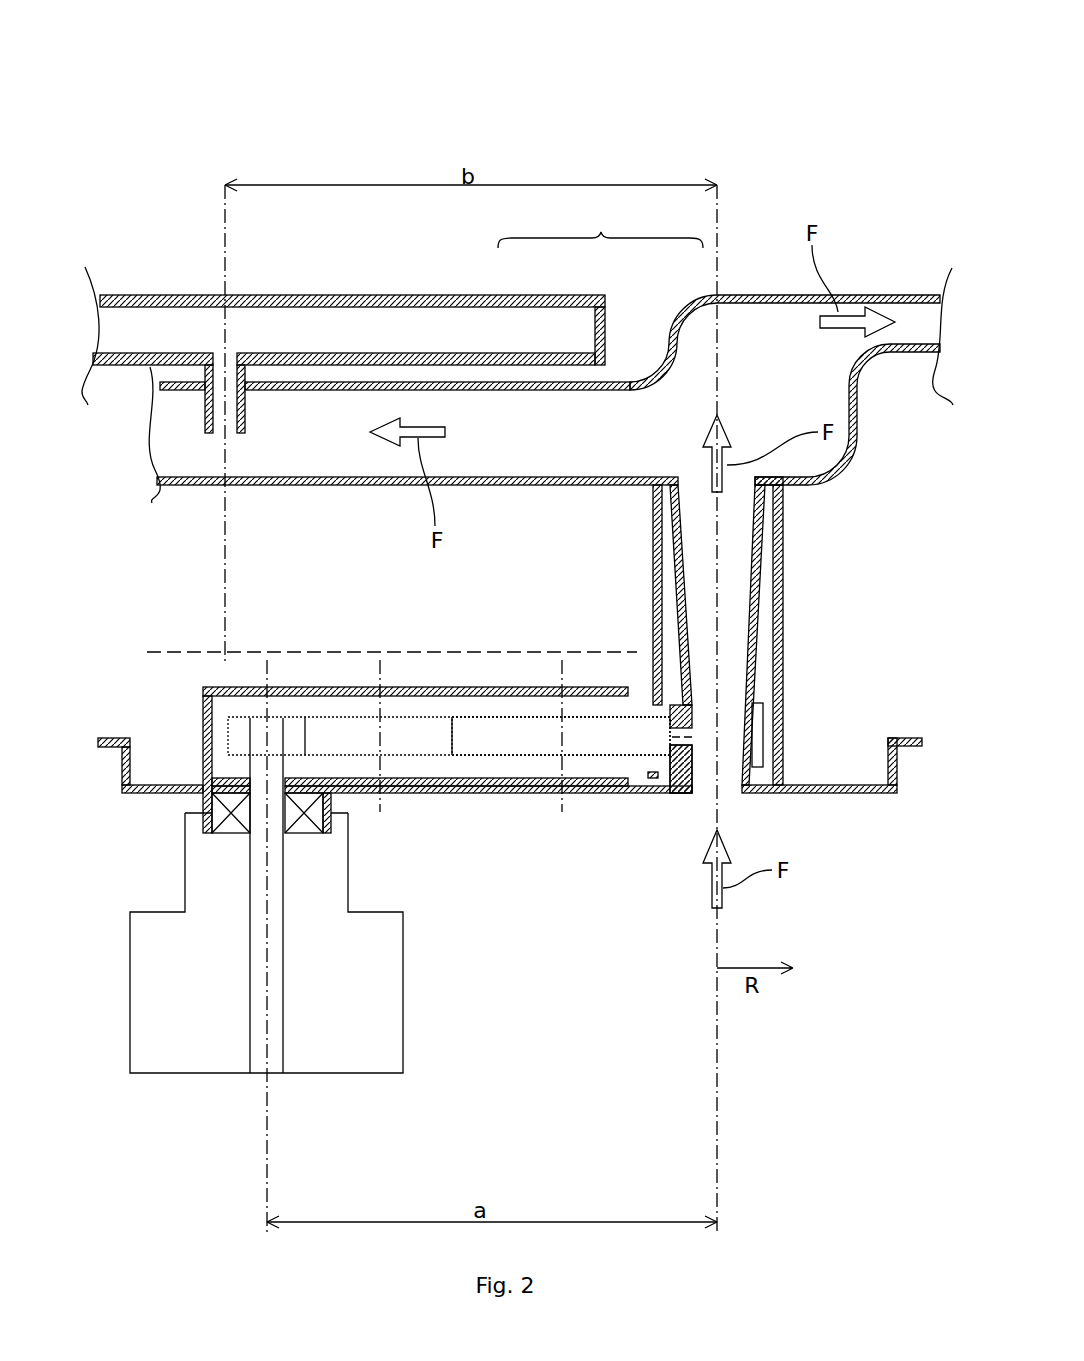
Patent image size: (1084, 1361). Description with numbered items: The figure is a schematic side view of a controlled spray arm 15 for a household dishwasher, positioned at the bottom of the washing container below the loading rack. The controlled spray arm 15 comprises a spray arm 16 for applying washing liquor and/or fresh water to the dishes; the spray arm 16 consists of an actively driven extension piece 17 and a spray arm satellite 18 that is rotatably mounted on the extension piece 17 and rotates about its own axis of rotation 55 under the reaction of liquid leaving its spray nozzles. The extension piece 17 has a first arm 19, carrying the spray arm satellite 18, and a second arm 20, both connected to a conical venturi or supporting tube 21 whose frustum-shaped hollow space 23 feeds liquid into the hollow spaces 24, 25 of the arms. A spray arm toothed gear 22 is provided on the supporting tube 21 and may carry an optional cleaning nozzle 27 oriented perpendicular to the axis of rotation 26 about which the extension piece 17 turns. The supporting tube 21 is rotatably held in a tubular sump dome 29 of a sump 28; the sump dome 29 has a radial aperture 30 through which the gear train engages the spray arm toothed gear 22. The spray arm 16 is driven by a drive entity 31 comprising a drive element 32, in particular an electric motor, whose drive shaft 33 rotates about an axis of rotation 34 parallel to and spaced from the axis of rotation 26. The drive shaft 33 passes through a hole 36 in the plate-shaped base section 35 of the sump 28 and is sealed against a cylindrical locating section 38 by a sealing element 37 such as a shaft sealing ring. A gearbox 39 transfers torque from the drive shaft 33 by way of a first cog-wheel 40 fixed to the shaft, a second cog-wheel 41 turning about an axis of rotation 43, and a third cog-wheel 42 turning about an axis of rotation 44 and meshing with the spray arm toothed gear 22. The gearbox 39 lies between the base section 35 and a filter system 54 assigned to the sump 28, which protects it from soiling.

The controlled spray arm 15 is at (387, 81).
The spray arm 16 is at (601, 232).
The extension piece 17 is at (697, 301).
The spray arm satellite 18 is at (535, 295).
The first arm 19 is at (318, 486).
The second arm 20 is at (900, 355).
The supporting tube 21 is at (758, 603).
The spray arm toothed gear 22 is at (770, 718).
The hollow space 23 is at (733, 560).
The hollow space 24 is at (503, 438).
The hollow space 25 is at (910, 318).
The axis of rotation 26 is at (719, 1073).
The cleaning nozzle 27 is at (672, 770).
The sump 28 is at (833, 793).
The sump dome 29 is at (783, 505).
The radial aperture 30 is at (652, 707).
The drive entity 31 is at (487, 957).
The drive element 32 is at (152, 1073).
The drive shaft 33 is at (283, 1052).
The axis of rotation 34 is at (268, 1163).
The base section 35 is at (433, 794).
The hole 36 is at (195, 790).
The sealing element 37 is at (205, 817).
The locating section 38 is at (330, 800).
The gearbox 39 is at (235, 688).
The first cog-wheel 40 is at (292, 717).
The second cog-wheel 41 is at (425, 717).
The third cog-wheel 42 is at (500, 717).
The axis of rotation 43 is at (380, 650).
The axis of rotation 44 is at (562, 797).
The filter system 54 is at (177, 650).
The axis of rotation 55 is at (223, 258).